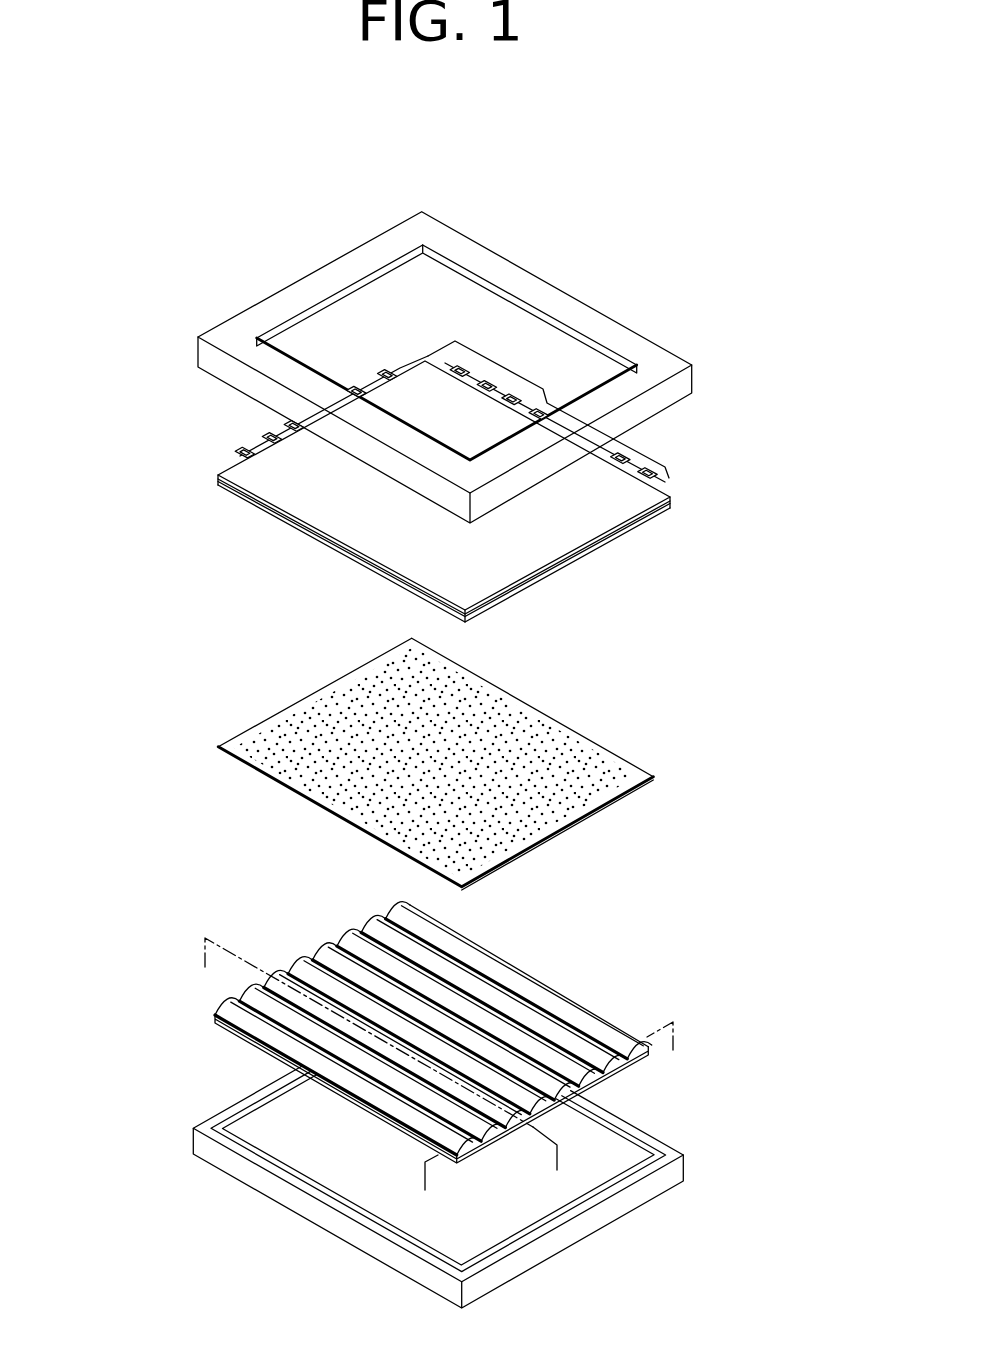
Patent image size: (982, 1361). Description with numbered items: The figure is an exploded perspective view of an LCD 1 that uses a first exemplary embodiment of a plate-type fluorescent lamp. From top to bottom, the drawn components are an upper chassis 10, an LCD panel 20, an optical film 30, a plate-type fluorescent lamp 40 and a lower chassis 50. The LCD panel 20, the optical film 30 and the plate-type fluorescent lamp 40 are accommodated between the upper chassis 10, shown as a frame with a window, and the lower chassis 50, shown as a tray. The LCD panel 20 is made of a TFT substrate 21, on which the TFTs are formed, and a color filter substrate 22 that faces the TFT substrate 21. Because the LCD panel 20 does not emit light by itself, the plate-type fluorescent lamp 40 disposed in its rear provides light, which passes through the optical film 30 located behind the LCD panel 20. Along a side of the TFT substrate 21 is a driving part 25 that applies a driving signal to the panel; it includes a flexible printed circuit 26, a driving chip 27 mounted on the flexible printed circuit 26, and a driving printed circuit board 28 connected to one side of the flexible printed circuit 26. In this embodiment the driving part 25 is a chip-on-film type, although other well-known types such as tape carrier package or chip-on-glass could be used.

The LCD 1 is at (97, 293).
The upper chassis 10 is at (692, 378).
The LCD panel 20 is at (392, 489).
The TFT substrate 21 is at (265, 506).
The color filter substrate 22 is at (232, 482).
The driving part 25 is at (630, 444).
The flexible printed circuit 26 is at (548, 409).
The driving chip 27 is at (660, 481).
The driving printed circuit board 28 is at (555, 422).
The optical film 30 is at (605, 748).
The plate-type fluorescent lamp 40 is at (658, 980).
The lower chassis 50 is at (653, 1192).